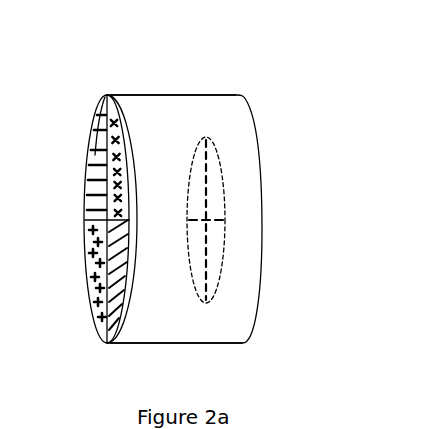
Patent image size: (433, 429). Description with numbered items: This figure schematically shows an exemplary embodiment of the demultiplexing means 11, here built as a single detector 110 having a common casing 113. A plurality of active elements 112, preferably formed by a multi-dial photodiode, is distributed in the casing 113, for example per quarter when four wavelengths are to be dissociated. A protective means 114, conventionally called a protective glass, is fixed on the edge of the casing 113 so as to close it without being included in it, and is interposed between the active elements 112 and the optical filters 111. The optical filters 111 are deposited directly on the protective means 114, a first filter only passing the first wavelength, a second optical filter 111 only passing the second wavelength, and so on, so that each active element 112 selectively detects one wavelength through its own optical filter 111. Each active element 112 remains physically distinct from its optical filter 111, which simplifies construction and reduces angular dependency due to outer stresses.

The demultiplexing means 11 is at (283, 111).
The detector 110 is at (144, 80).
The optical filter 111 is at (107, 95).
The active element 112 is at (197, 243).
The casing 113 is at (197, 113).
The protective means 114 is at (127, 330).